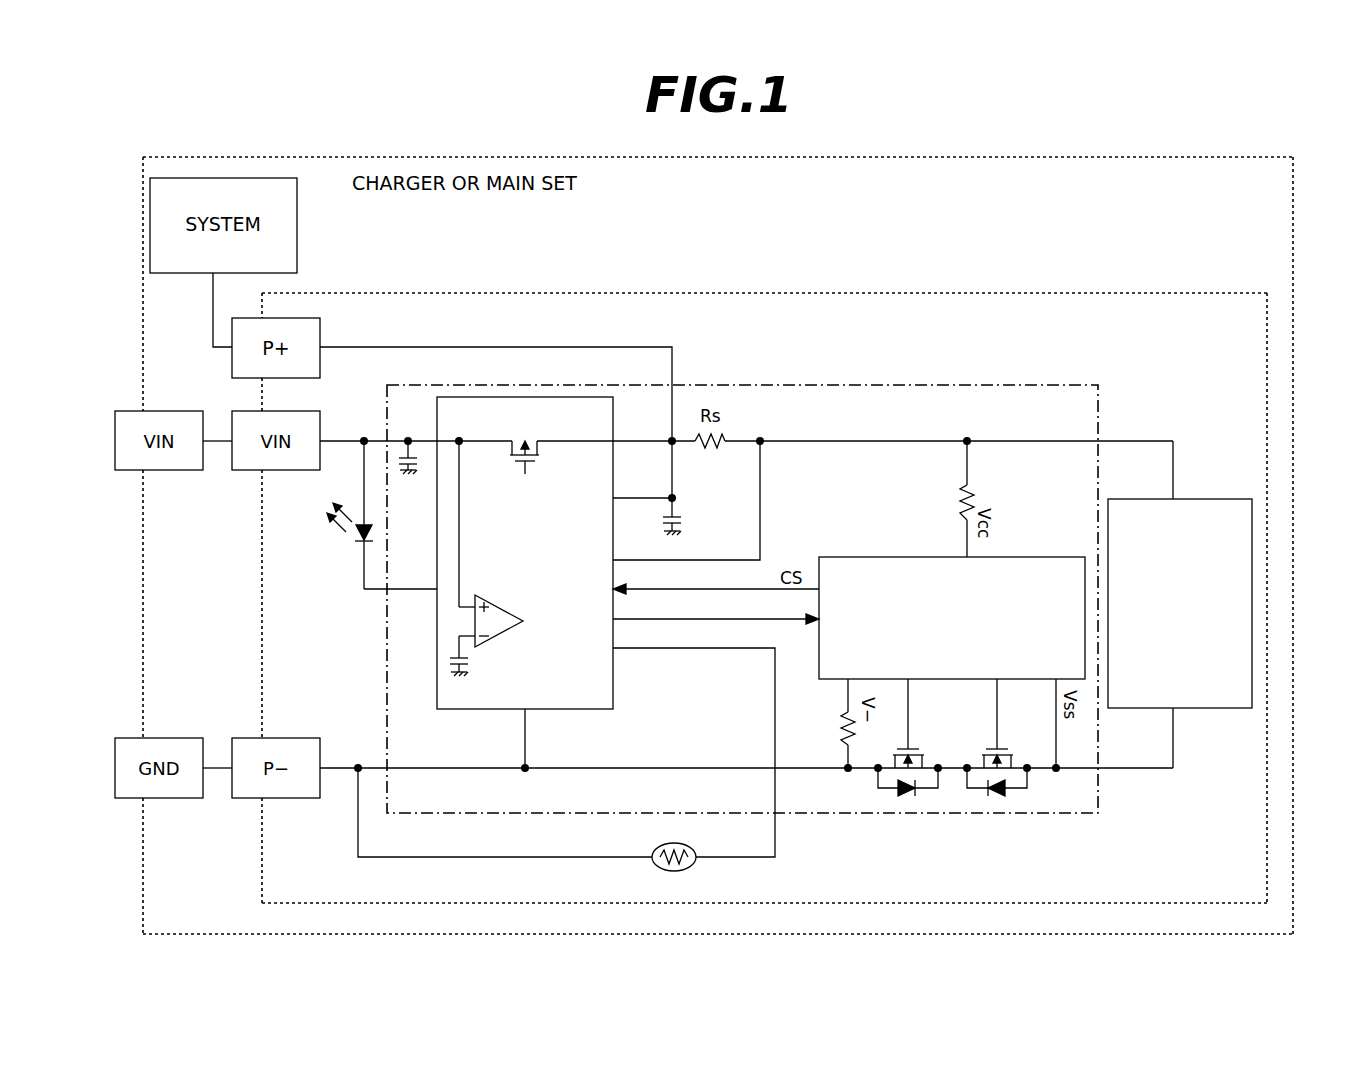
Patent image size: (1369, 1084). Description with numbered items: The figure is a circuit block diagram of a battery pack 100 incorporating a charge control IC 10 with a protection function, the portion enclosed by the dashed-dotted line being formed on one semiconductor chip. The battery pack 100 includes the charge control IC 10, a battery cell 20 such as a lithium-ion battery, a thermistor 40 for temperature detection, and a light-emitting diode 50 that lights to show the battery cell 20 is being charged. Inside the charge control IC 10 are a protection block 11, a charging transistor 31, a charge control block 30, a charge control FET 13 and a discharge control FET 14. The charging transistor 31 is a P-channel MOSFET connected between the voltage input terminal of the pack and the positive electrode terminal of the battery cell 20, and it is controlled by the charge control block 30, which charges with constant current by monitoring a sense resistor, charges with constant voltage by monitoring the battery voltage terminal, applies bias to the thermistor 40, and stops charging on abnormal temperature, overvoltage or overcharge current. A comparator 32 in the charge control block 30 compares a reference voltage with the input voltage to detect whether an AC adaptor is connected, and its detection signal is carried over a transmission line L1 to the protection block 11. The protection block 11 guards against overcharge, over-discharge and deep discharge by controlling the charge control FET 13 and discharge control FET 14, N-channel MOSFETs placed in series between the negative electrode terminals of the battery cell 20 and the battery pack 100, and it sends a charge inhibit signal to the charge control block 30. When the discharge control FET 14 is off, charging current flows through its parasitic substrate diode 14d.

The battery pack 100 is at (764, 581).
The charge control IC with a protection function 10 is at (745, 579).
The protection block 11 is at (952, 598).
The charge control FET 13 is at (926, 737).
The discharge control FET 14 is at (1018, 723).
The substrate diode 14d is at (979, 818).
The battery cell 20 is at (1180, 610).
The charge control block 30 is at (552, 582).
The charging transistor 31 is at (548, 437).
The comparator 32 is at (506, 559).
The thermistor 40 is at (566, 775).
The LED 50 is at (370, 522).
The transmission line L1 is at (716, 637).